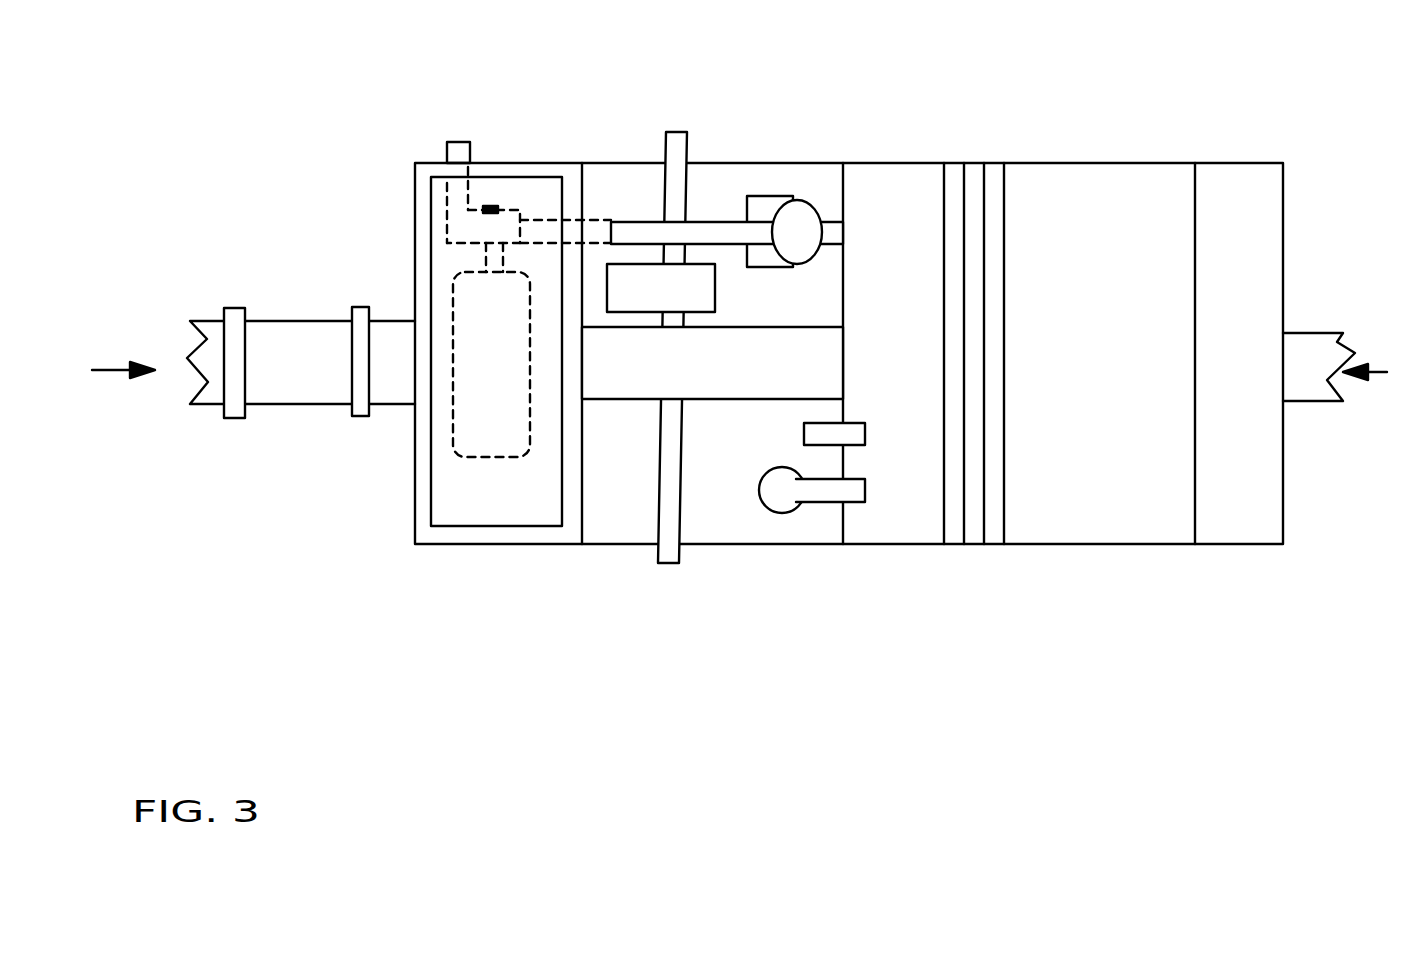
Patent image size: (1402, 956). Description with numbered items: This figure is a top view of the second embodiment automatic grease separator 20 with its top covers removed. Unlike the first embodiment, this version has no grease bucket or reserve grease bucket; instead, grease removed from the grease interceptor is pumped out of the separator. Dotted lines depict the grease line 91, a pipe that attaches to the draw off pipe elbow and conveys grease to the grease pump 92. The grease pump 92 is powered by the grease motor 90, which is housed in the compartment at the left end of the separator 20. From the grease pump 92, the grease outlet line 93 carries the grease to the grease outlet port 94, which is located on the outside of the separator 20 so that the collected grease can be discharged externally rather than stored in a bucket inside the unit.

The fluid treatment apparatus 20 is at (162, 757).
The grease motor 90 is at (500, 413).
The grease line 91 is at (547, 215).
The grease pump 92 is at (493, 207).
The grease outlet line 93 is at (447, 226).
The grease outlet port 94 is at (448, 142).